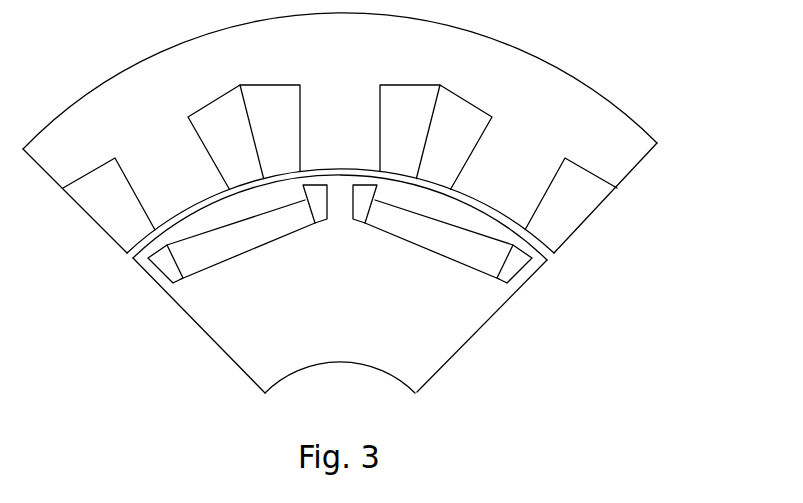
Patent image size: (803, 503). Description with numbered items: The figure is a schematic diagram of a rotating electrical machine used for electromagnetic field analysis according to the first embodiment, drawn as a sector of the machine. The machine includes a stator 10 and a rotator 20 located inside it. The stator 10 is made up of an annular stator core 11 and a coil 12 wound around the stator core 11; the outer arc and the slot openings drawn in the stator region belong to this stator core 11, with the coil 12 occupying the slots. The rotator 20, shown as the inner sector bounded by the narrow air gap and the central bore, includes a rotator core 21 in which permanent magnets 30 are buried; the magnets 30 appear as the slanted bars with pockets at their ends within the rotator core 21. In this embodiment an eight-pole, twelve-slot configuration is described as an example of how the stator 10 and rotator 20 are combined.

The stator 10 is at (563, 98).
The stator core 11 is at (632, 145).
The coil 12 is at (568, 212).
The rotator 20 is at (467, 313).
The rotator core 21 is at (423, 353).
The permanent magnets 30 is at (385, 218).